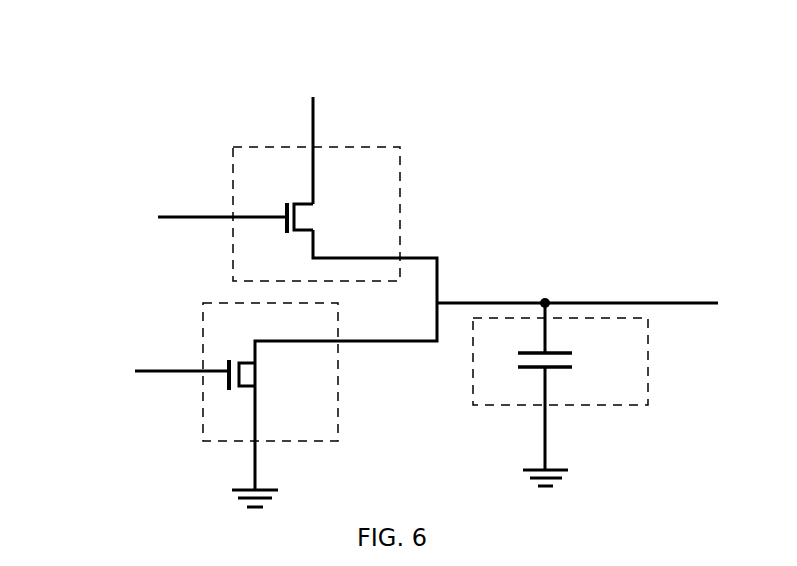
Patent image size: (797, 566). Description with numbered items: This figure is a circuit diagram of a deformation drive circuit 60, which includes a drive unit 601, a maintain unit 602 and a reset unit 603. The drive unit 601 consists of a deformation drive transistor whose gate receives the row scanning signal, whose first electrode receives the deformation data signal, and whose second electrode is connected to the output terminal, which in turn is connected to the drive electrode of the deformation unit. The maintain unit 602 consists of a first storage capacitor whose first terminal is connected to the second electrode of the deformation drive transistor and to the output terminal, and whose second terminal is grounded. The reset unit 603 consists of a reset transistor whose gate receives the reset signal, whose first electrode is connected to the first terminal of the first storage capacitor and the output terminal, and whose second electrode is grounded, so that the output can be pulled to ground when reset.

The deformation drive circuit 60 is at (403, 265).
The drive unit 601 is at (378, 204).
The maintain unit 602 is at (571, 332).
The reset unit 603 is at (324, 384).